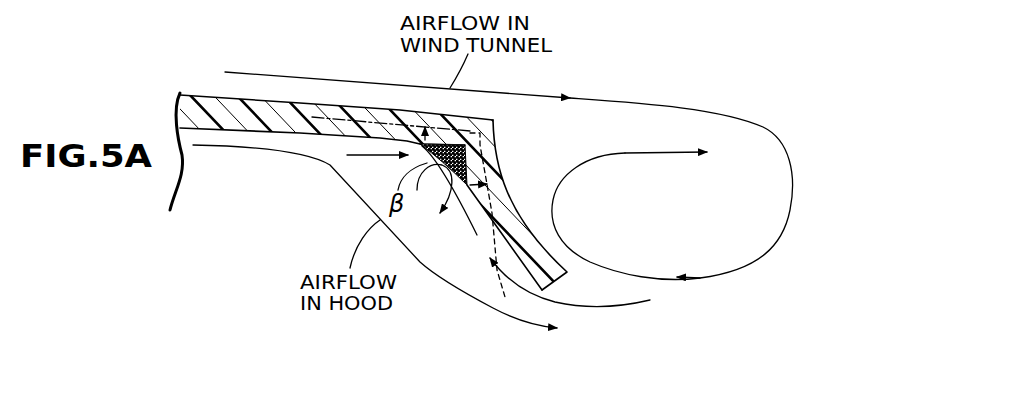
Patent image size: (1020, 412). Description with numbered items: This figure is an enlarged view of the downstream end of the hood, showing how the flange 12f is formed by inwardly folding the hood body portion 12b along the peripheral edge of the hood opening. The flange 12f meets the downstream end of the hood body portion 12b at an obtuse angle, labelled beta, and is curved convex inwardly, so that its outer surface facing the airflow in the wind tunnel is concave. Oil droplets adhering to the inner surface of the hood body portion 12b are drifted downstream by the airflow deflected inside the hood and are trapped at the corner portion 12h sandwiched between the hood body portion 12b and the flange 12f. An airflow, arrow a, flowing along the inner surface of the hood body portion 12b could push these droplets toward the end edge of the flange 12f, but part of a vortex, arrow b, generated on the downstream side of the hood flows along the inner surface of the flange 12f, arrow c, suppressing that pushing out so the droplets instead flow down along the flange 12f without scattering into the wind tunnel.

The hood body portion 12b is at (210, 105).
The flange 12f is at (495, 180).
The corner portion 12h is at (468, 157).
The airflow along inner surface of hood body portion a is at (363, 156).
The vortex b is at (625, 153).
The airflow along inner surface of flange c is at (465, 215).